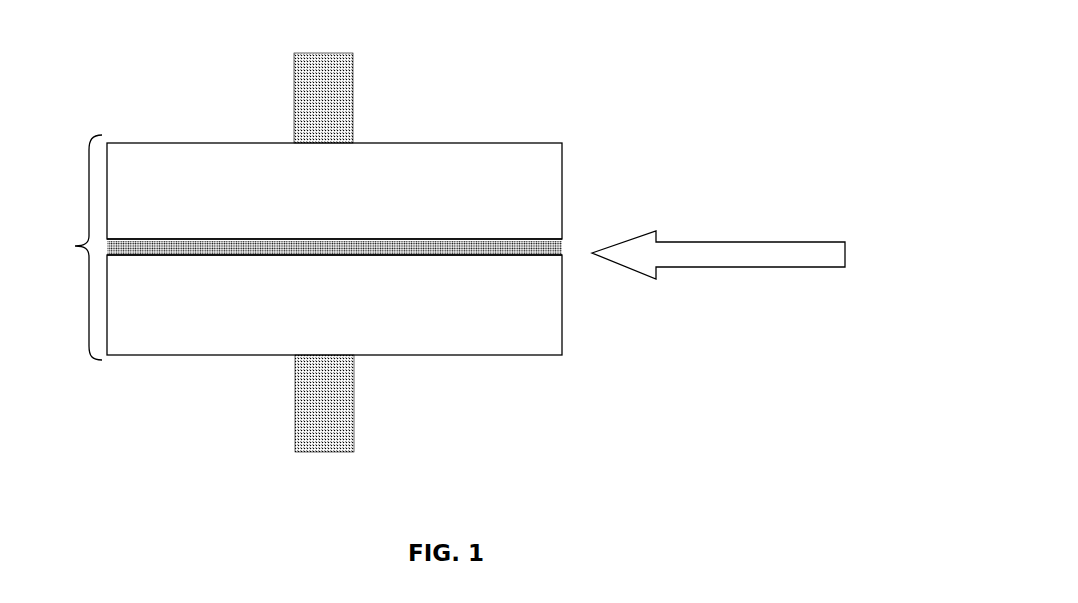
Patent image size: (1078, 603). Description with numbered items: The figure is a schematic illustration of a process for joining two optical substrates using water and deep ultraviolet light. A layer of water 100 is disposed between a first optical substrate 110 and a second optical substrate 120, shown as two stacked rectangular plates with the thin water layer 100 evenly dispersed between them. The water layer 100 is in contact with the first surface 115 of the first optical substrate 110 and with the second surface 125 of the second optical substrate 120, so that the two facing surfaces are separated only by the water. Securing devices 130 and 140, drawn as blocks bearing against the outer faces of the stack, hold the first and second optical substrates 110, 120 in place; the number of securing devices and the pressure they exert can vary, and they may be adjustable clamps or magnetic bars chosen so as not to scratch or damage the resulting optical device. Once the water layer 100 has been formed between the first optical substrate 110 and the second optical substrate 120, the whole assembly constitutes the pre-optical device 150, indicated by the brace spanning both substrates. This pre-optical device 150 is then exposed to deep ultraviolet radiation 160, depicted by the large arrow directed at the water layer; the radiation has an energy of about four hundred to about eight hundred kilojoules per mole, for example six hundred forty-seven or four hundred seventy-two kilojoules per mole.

The layer of water 100 is at (566, 251).
The first optical substrate 110 is at (568, 185).
The first surface 115 is at (387, 237).
The second optical substrate 120 is at (521, 362).
The second surface 125 is at (366, 262).
The securing device 130 is at (341, 462).
The securing device 140 is at (361, 92).
The pre-optical device 150 is at (74, 247).
The deep ultraviolet (DUV) radiation 160 is at (718, 250).